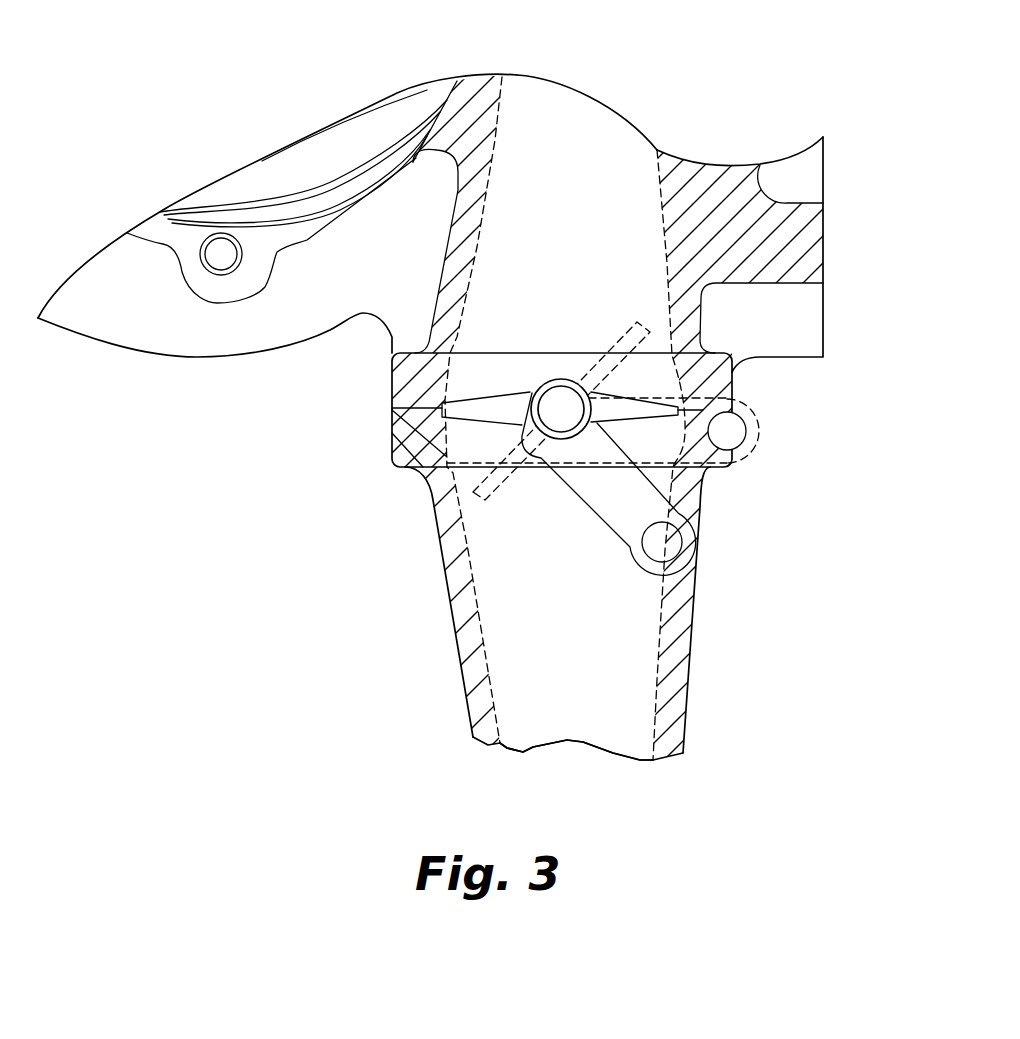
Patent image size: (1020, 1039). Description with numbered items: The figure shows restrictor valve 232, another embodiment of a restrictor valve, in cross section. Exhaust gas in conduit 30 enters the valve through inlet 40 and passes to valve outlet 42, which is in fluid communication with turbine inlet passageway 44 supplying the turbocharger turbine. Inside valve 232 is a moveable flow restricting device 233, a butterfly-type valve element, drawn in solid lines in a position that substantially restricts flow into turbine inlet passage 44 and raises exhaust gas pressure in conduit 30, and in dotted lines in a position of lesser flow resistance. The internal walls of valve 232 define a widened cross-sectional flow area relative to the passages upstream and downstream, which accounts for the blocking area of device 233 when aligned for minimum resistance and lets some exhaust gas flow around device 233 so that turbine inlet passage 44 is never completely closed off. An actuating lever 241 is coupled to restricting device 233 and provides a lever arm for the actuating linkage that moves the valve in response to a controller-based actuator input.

The conduit 30 is at (680, 606).
The inlet 40 is at (557, 558).
The turbine inlet passageway 44 is at (565, 178).
The valve outlet 42 is at (557, 360).
The actuating lever 241 is at (638, 500).
The moveable flow restricting device 233 is at (497, 400).
The restrictor valve 232 is at (353, 434).